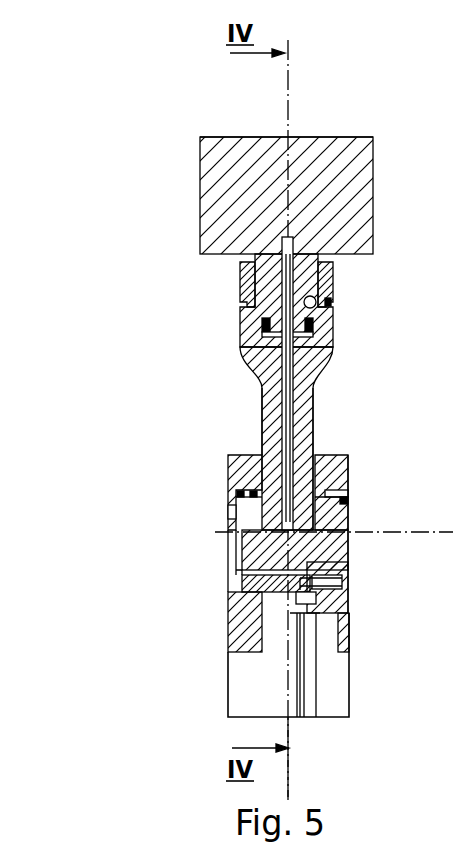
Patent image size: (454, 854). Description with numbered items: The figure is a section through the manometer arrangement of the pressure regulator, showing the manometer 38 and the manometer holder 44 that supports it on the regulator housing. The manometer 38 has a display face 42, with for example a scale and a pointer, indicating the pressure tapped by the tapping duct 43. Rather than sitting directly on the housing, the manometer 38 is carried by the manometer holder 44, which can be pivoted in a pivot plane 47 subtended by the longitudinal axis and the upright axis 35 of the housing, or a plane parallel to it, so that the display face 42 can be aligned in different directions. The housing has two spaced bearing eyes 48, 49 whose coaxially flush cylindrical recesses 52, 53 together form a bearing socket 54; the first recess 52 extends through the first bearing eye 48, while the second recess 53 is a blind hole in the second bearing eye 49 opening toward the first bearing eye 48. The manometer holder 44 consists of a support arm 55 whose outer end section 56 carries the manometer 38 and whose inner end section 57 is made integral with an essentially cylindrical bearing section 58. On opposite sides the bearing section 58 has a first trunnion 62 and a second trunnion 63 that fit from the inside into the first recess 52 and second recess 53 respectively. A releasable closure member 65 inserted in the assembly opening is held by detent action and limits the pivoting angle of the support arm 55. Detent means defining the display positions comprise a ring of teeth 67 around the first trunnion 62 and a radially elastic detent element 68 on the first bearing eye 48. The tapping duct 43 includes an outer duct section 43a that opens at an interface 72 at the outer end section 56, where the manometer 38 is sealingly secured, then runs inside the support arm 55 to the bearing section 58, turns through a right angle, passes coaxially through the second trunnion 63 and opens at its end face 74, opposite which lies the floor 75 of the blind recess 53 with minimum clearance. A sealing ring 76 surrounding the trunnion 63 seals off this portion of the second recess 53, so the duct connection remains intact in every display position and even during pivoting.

The upright axis 35 is at (283, 118).
The manometer 38 is at (360, 183).
The display face 42 is at (337, 130).
The tapping duct 43 is at (333, 383).
The outer duct section 43a is at (300, 388).
The manometer holder 44 is at (324, 421).
The pivot plane 47 is at (292, 735).
The first bearing eye 48 is at (330, 466).
The second bearing eye 49 is at (240, 617).
The first recess 52 is at (348, 512).
The second recess 53 is at (206, 466).
The bearing socket 54 is at (232, 507).
The support arm 55 is at (333, 343).
The outer end section 56 is at (333, 270).
The inner end section 57 is at (262, 468).
The bearing section 58 is at (350, 580).
The first trunnion 62 is at (335, 542).
The second trunnion 63 is at (246, 551).
The closure member 65 is at (312, 605).
The ring of teeth 67 is at (345, 492).
The detent element 68 is at (350, 567).
The interface 72 is at (322, 303).
The end face 74 is at (222, 512).
The floor 75 is at (233, 546).
The sealing ring 76 is at (235, 572).